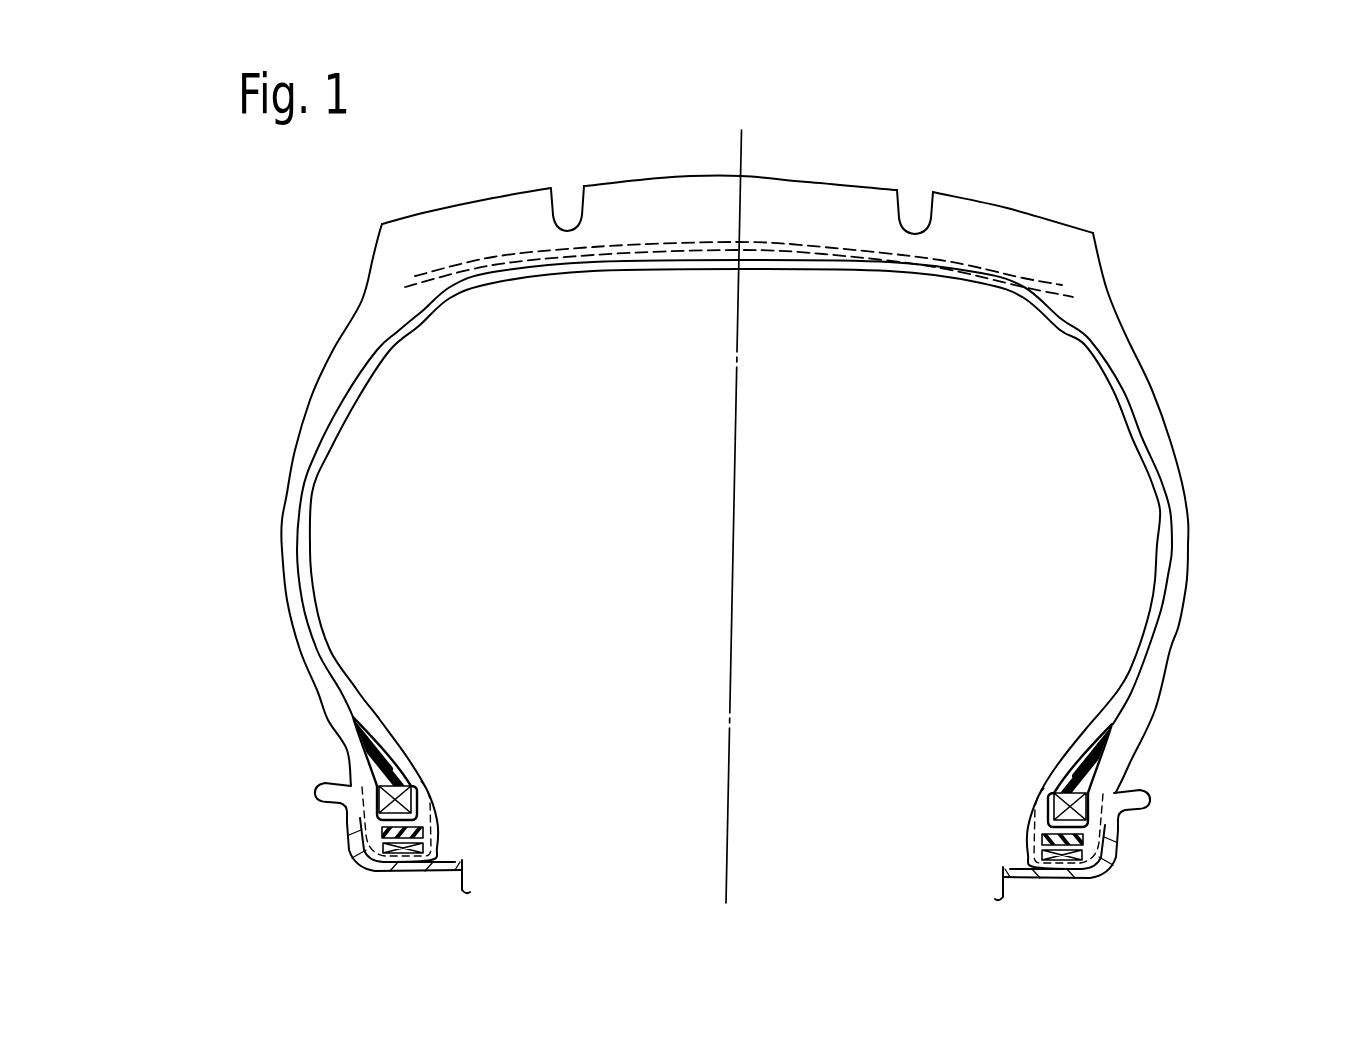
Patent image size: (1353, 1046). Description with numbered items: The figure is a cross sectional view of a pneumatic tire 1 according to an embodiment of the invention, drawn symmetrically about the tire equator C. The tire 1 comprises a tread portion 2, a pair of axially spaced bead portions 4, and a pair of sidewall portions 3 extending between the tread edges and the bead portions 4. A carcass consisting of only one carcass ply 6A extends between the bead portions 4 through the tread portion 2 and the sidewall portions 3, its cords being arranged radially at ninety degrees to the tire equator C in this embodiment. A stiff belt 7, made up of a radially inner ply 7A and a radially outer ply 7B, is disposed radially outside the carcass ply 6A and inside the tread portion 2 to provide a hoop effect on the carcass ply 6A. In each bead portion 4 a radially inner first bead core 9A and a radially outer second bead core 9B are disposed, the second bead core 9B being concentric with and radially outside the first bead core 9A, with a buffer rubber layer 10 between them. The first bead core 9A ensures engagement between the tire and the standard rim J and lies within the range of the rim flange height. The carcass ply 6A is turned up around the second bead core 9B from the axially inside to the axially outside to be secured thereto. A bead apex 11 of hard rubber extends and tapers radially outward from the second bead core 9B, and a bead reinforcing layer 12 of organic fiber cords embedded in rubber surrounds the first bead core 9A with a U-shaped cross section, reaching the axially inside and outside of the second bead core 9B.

The pneumatic tire 1 is at (1198, 295).
The tread portion 2 is at (852, 175).
The sidewall portions 3 is at (275, 481).
The bead portions 4 is at (748, 769).
The carcass ply 6A is at (1130, 388).
The belt 7 is at (739, 342).
The radially inner ply 7A is at (813, 255).
The radially outer ply 7B is at (918, 256).
The first bead core 9A is at (423, 846).
The second bead core 9B is at (405, 797).
The buffer rubber layer 10 is at (422, 832).
The bead apex 11 is at (377, 738).
The bead reinforcing layer 12 is at (343, 843).
The tire equator C is at (740, 495).
The standard rim J is at (1113, 828).